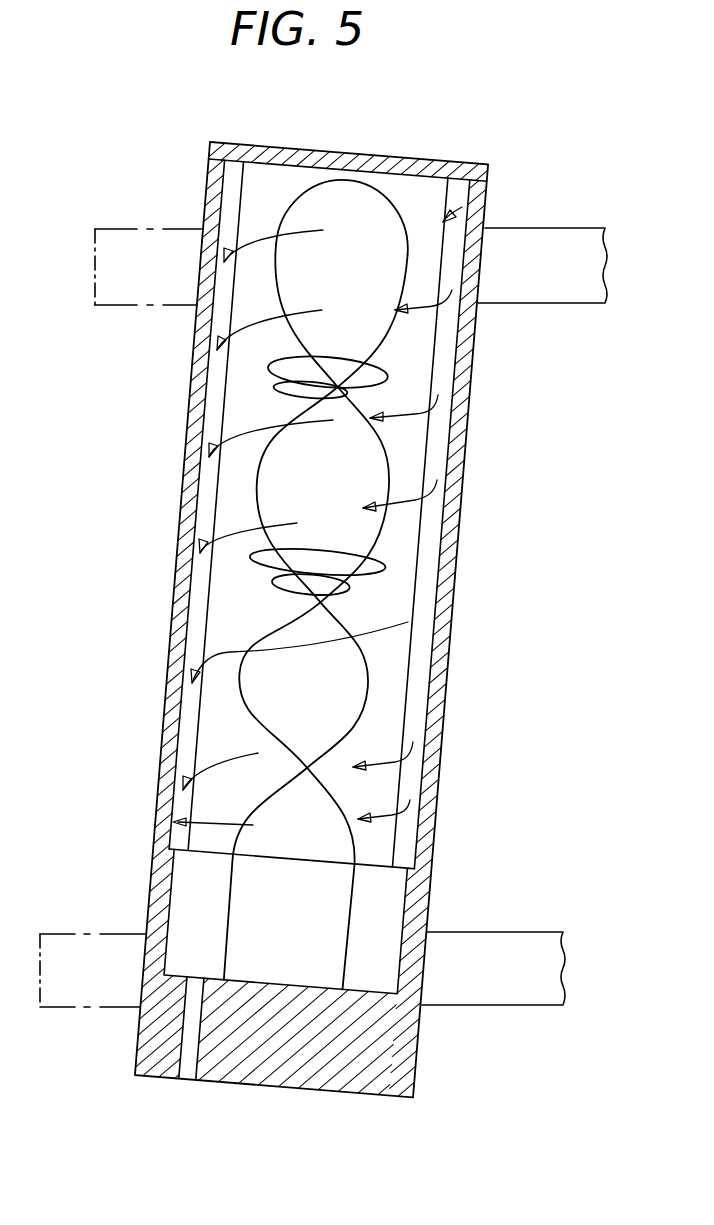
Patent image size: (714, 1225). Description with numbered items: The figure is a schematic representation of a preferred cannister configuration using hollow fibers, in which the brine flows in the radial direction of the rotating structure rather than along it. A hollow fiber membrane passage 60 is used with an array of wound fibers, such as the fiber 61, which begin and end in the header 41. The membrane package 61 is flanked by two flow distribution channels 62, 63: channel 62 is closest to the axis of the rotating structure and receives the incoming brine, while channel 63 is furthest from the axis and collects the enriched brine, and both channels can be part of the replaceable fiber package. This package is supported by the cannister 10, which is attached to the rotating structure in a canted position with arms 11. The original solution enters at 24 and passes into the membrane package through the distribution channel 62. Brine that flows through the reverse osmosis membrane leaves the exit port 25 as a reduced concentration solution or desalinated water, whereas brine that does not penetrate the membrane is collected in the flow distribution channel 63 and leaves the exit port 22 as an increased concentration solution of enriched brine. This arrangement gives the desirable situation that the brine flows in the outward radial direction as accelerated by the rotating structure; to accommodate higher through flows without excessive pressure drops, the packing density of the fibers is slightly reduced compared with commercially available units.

The cannister 10 is at (200, 383).
The arms 11 is at (563, 293).
The exit port 22 is at (157, 822).
The entry point 24 is at (488, 198).
The exit port 25 is at (190, 1083).
The header 41 is at (392, 888).
The hollow fiber membrane passage 60 is at (225, 597).
The fiber 61 is at (383, 528).
The flow distribution channel 62 is at (440, 423).
The flow distribution channel 63 is at (205, 493).